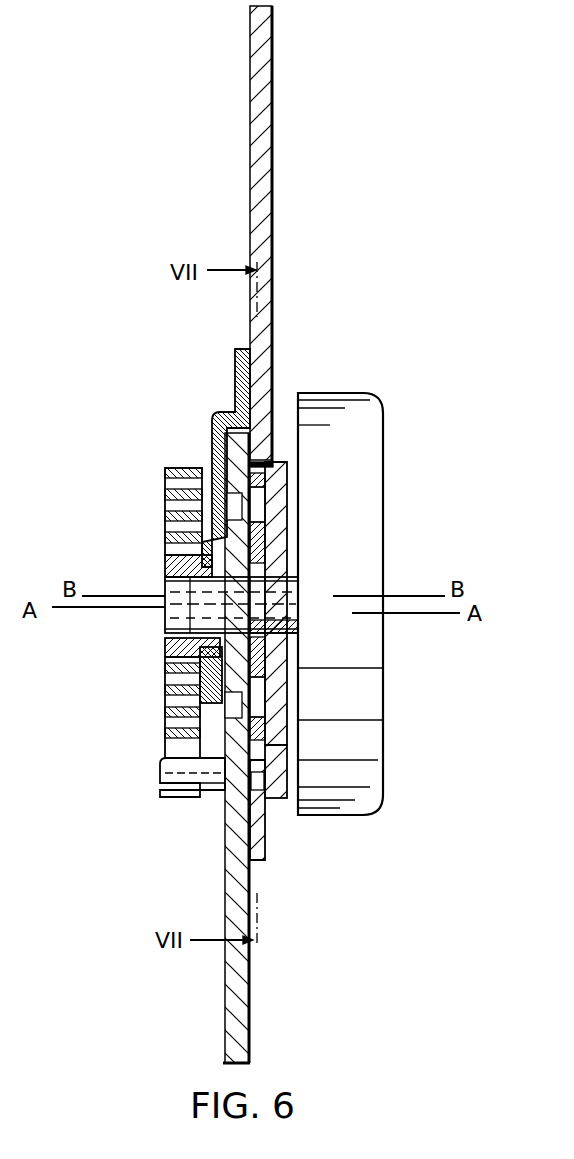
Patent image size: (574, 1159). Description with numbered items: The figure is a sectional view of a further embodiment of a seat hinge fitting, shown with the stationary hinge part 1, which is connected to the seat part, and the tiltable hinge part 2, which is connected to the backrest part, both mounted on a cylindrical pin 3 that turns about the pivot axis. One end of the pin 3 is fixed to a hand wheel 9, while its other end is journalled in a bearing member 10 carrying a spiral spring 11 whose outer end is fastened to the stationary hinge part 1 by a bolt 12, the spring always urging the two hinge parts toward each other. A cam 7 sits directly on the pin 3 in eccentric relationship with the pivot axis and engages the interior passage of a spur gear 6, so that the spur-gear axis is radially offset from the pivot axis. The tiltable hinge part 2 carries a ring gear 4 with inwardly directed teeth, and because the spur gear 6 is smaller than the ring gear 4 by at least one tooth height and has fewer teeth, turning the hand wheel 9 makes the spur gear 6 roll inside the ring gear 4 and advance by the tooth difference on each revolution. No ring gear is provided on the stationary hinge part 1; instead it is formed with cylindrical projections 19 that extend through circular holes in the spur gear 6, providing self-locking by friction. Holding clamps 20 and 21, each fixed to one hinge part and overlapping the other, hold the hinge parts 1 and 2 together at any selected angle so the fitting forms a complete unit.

The stationary hinge part 1 is at (232, 1028).
The tiltable hinge part 2 is at (262, 58).
The pin 3 is at (289, 588).
The ring gear 4 is at (277, 457).
The spur gear 6 is at (265, 542).
The cam 7 is at (262, 620).
The hand wheel 9 is at (367, 418).
The bearing member 10 is at (165, 568).
The spiral spring 11 is at (165, 696).
The bolt 12 is at (175, 773).
The cylindrical projections 19 is at (262, 500).
The holding clamp 20 is at (210, 433).
The holding clamp 21 is at (265, 848).